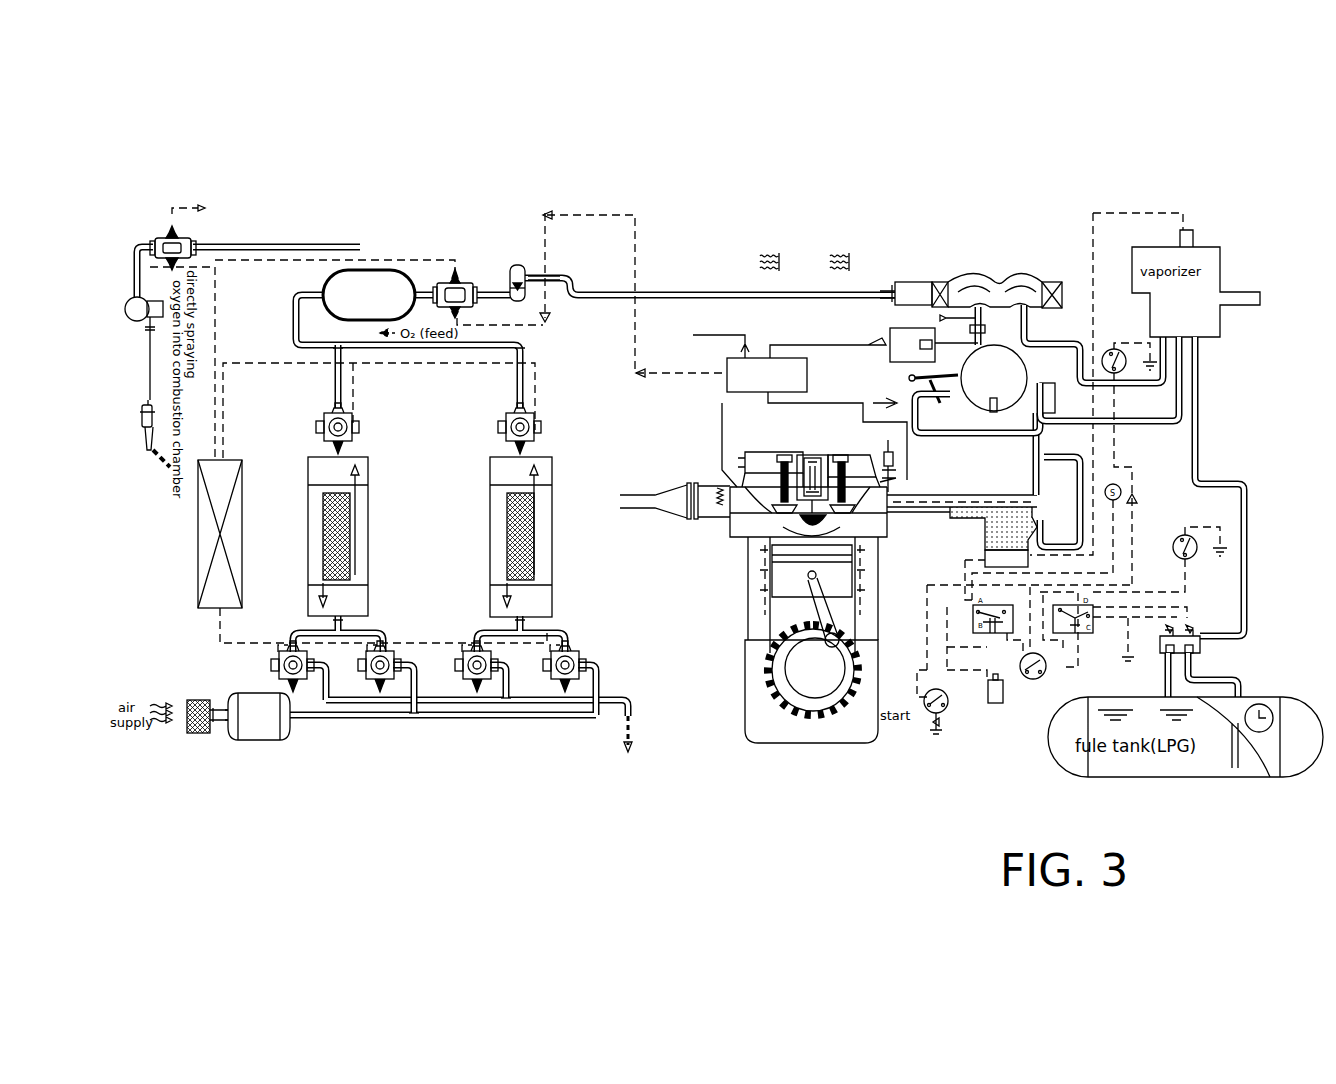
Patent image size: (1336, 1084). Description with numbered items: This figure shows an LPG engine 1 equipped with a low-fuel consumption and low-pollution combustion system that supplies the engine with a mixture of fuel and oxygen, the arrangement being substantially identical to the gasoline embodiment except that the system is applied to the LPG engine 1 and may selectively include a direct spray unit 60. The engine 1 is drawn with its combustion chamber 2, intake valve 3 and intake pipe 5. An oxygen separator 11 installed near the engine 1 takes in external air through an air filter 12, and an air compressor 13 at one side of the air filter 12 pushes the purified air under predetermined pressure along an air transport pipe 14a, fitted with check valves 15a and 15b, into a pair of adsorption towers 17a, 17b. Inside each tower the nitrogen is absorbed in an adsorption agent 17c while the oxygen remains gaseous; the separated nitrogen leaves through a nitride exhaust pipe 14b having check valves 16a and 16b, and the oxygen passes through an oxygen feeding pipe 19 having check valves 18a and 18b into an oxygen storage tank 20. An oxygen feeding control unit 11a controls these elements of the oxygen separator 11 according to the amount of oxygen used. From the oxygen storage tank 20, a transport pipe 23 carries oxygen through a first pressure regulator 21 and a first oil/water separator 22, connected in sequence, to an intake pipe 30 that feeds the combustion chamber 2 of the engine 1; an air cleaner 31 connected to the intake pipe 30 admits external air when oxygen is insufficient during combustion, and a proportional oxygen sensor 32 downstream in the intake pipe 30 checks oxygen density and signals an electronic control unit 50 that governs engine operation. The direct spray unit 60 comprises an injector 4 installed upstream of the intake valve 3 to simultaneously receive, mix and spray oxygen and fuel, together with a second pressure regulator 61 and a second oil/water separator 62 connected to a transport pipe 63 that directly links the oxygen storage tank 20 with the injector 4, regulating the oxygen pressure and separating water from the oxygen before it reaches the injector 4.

The engine 1 is at (739, 630).
The combustion chamber 2 is at (855, 538).
The intake valve 3 is at (822, 455).
The injector 4 is at (141, 438).
The intake pipe 5 is at (668, 505).
The oxygen separator 11 is at (560, 624).
The oxygen feeding control unit 11a is at (198, 555).
The air filter 12 is at (190, 735).
The air compressor 13 is at (262, 735).
The air transport pipe 14a is at (545, 720).
The nitride exhaust pipe 14b is at (575, 705).
The check valve 15a is at (388, 650).
The check valve 15b is at (580, 660).
The check valve 16a is at (278, 670).
The check valve 16b is at (466, 650).
The adsorption tower 17a is at (370, 468).
The adsorption tower 17b is at (554, 470).
The adsorption agent 17c is at (505, 538).
The check valve 18a is at (362, 431).
The check valve 18b is at (544, 432).
The oxygen feeding pipe 19 is at (292, 324).
The oxygen storage tank 20 is at (383, 264).
The first pressure regulator 21 is at (444, 281).
The first oil/water separator 22 is at (514, 264).
The transport pipe 23 is at (548, 274).
The intake pipe 30 is at (714, 291).
The air cleaner 31 is at (945, 282).
The proportional oxygen sensor 32 is at (982, 322).
The electronic control unit 50 is at (722, 384).
The direct spray unit 60 is at (156, 232).
The second pressure regulator 61 is at (158, 240).
The second oil/water separator 62 is at (134, 316).
The transport pipe 63 is at (230, 246).